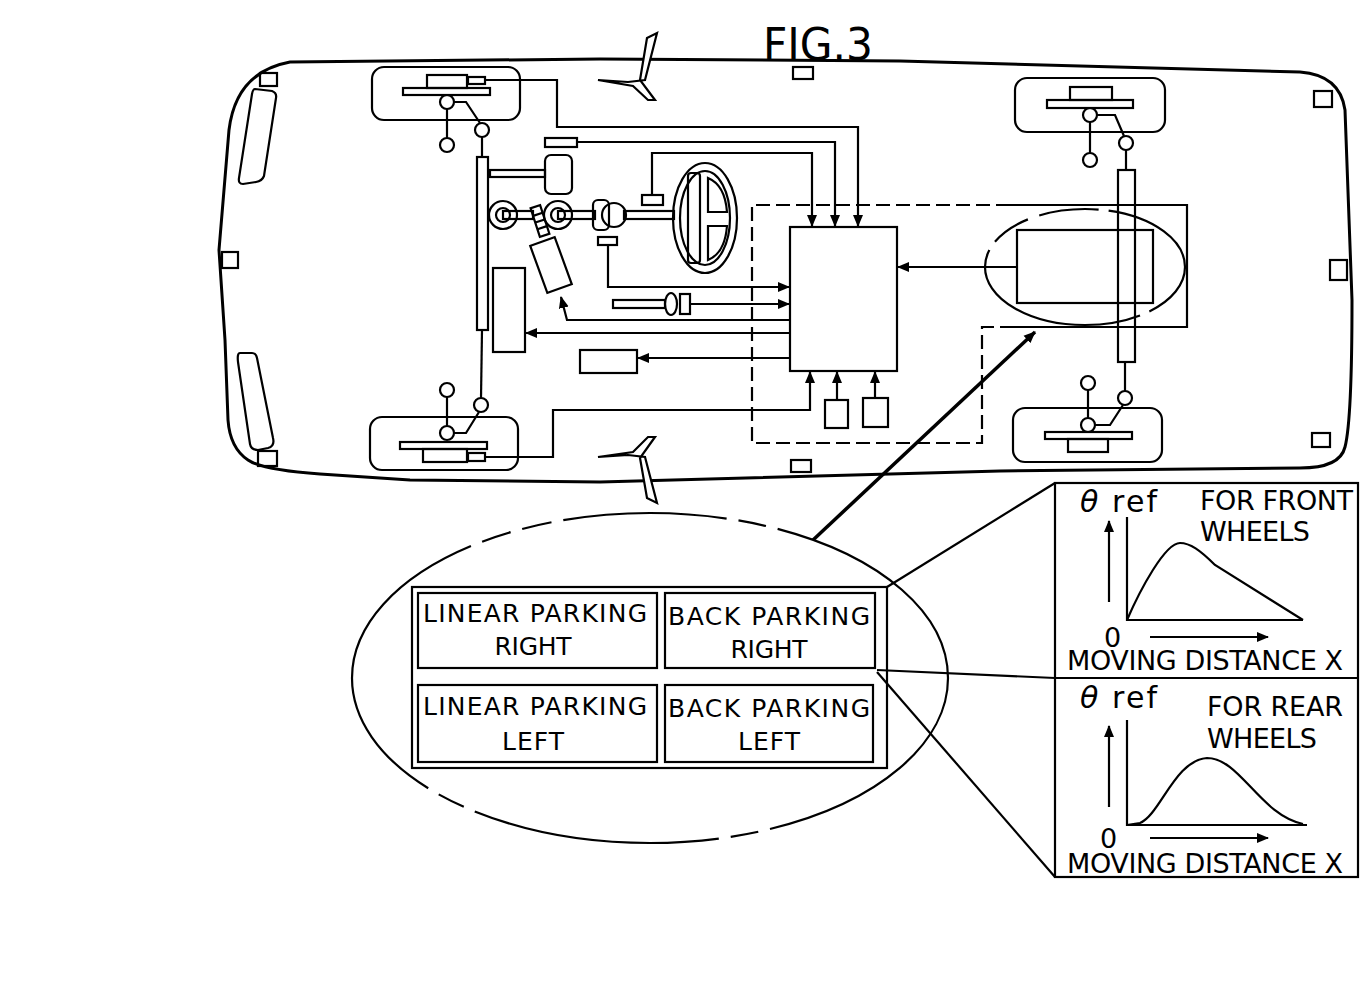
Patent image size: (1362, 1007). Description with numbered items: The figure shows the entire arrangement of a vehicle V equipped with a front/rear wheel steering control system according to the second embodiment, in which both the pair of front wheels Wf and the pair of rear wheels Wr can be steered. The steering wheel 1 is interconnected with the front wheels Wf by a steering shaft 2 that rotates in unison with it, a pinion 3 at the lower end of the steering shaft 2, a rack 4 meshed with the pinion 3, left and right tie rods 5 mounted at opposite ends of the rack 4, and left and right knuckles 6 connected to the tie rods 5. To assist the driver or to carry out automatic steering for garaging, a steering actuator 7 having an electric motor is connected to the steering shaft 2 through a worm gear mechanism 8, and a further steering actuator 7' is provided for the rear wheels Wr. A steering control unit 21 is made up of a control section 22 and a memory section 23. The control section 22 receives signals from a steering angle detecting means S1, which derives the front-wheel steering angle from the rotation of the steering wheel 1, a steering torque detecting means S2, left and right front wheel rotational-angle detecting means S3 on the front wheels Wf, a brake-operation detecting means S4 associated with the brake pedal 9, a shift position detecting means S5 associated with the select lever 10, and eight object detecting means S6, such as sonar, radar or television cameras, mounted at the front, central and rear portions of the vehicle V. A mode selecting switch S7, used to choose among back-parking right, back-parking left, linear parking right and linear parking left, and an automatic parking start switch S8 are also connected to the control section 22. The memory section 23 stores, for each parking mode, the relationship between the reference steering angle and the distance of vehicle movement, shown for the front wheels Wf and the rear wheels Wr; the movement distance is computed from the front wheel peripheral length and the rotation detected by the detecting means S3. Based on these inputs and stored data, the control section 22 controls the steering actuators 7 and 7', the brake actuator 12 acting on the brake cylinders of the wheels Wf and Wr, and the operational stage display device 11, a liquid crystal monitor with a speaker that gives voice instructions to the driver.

The vehicle V is at (338, 478).
The steering wheel 1 is at (735, 197).
The steering shaft 2 is at (588, 236).
The pinion 3 is at (482, 186).
The rack 4 is at (477, 280).
The tie rod 5 is at (485, 143).
The knuckle 6 is at (465, 110).
The steering actuator 7 is at (660, 278).
The steering actuator for the rear wheels 7' is at (1152, 271).
The worm gear mechanism 8 is at (526, 232).
The brake pedal 9 is at (572, 172).
The select lever 10 is at (667, 293).
The operational stage display device 11 is at (520, 308).
The brake actuator 12 is at (580, 365).
The steering control unit 21 is at (1190, 250).
The control section 22 is at (857, 314).
The memory section 23 is at (1097, 279).
The steering angle detecting means S1 is at (645, 195).
The steering torque detecting means S2 is at (603, 247).
The front wheel rotational-angle detecting means S3 is at (482, 77).
The brake-operation detecting means S4 is at (540, 138).
The shift position detecting means S5 is at (690, 296).
The object detecting means S6 is at (277, 84).
The mode selecting switch S7 is at (825, 416).
The automatic parking start switch S8 is at (878, 418).
The front wheel Wf is at (383, 120).
The rear wheel Wr is at (1165, 112).